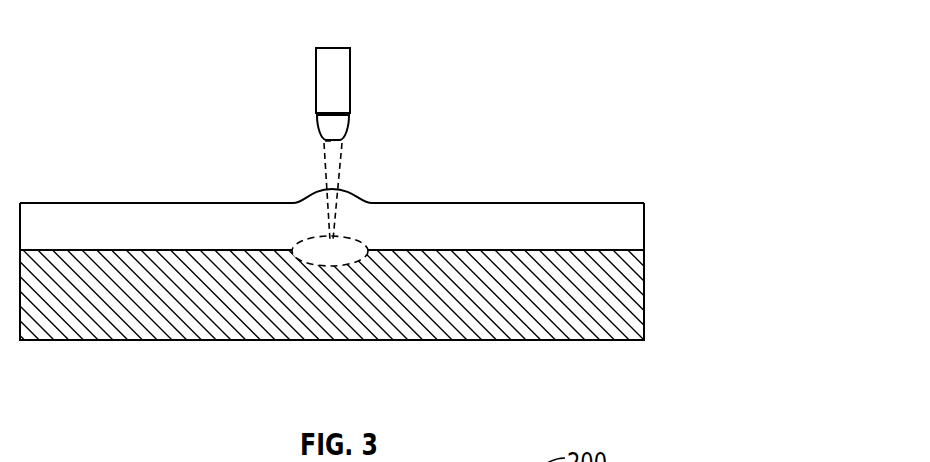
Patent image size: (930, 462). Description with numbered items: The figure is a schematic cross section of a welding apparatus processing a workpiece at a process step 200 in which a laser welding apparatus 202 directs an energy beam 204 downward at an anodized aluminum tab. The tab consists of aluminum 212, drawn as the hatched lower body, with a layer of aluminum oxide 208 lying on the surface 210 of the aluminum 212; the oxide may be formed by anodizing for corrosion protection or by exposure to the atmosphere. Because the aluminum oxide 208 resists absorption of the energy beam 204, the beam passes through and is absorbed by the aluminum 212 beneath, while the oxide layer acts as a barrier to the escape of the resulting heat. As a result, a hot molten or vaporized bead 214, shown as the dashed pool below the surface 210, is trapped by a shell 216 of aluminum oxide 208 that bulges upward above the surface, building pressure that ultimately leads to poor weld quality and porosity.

The process step 200 is at (371, 199).
The laser welding apparatus 202 is at (347, 64).
The energy beam 204 is at (335, 153).
The layer of aluminum oxide 208 is at (523, 213).
The surface 210 is at (120, 250).
The aluminum 212 is at (105, 333).
The hot molten/vaporized bead 214 is at (327, 240).
The shell of aluminum oxide 216 is at (315, 192).